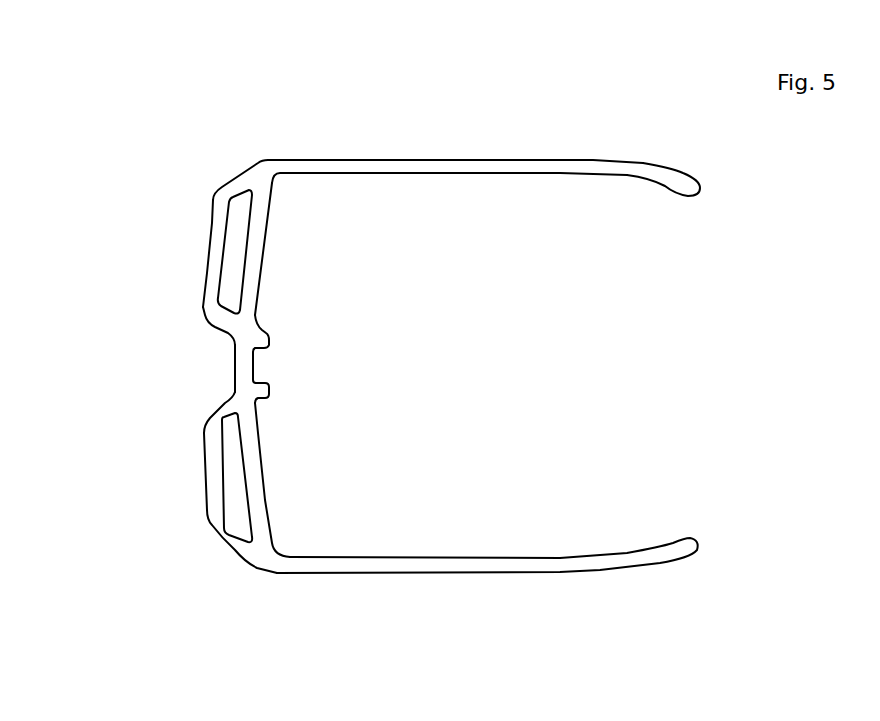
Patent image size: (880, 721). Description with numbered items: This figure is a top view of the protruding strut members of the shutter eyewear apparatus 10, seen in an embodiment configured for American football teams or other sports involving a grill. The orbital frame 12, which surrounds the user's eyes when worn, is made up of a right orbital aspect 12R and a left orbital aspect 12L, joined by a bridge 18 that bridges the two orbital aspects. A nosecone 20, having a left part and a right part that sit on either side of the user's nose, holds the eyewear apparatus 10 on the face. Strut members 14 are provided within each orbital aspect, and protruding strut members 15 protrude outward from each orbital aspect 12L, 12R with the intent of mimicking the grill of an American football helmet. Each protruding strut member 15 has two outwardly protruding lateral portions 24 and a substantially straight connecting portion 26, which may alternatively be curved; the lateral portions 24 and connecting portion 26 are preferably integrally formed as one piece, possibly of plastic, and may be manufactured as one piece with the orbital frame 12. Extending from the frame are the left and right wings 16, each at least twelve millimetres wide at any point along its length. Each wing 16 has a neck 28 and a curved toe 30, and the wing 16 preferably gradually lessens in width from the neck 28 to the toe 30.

The shutter eyewear apparatus 10 is at (141, 83).
The orbital frame 12 is at (260, 267).
The right orbital aspect 12R is at (156, 170).
The left orbital aspect 12L is at (180, 569).
The strut members 14 is at (122, 355).
The protruding strut members 15 is at (193, 273).
The wing 16 is at (500, 146).
The bridge 18 is at (205, 363).
The nosecone 20 is at (279, 337).
The outwardly protruding lateral portions 24 is at (243, 157).
The substantially straight connecting portion 26 is at (213, 262).
The neck 28 is at (295, 146).
The curved toe 30 is at (660, 207).